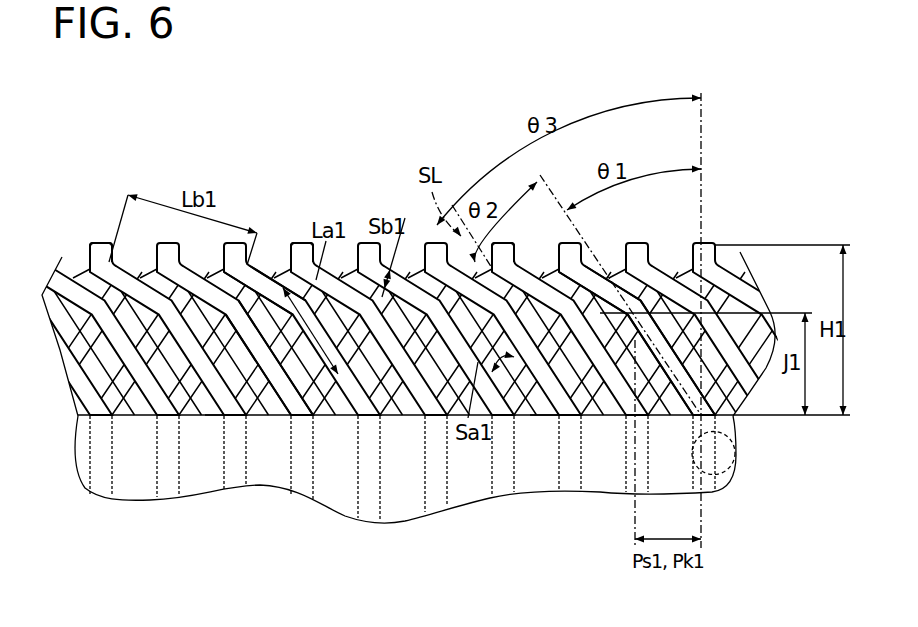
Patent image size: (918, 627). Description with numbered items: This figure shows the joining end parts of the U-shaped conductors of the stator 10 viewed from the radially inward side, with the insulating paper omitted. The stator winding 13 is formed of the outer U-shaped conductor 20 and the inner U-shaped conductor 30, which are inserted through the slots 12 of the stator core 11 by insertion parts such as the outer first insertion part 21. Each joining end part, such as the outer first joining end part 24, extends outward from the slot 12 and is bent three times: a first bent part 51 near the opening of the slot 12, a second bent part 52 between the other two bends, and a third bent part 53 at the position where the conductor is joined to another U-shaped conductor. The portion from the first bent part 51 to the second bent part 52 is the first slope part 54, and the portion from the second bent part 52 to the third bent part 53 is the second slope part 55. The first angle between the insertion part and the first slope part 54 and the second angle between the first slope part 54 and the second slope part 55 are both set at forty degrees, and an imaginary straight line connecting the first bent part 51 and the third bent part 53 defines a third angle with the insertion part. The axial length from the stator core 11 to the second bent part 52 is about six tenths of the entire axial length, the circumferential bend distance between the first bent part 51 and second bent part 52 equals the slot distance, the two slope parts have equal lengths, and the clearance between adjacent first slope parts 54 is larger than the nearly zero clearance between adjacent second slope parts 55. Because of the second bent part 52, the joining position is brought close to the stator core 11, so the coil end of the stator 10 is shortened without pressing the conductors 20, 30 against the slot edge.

The stator 10 is at (424, 315).
The stator core 11 is at (402, 507).
The slot 12 is at (712, 468).
The stator winding 13 is at (292, 238).
The outer U-shaped conductor 20 is at (207, 392).
The outer first insertion part 21 is at (707, 452).
The outer first joining end part 24 is at (614, 418).
The inner U-shaped conductor 30 is at (546, 418).
The first bent part 51 is at (285, 398).
The second bent part 52 is at (300, 292).
The third bent part 53 is at (98, 270).
The first slope part 54 is at (223, 392).
The second slope part 55 is at (140, 330).